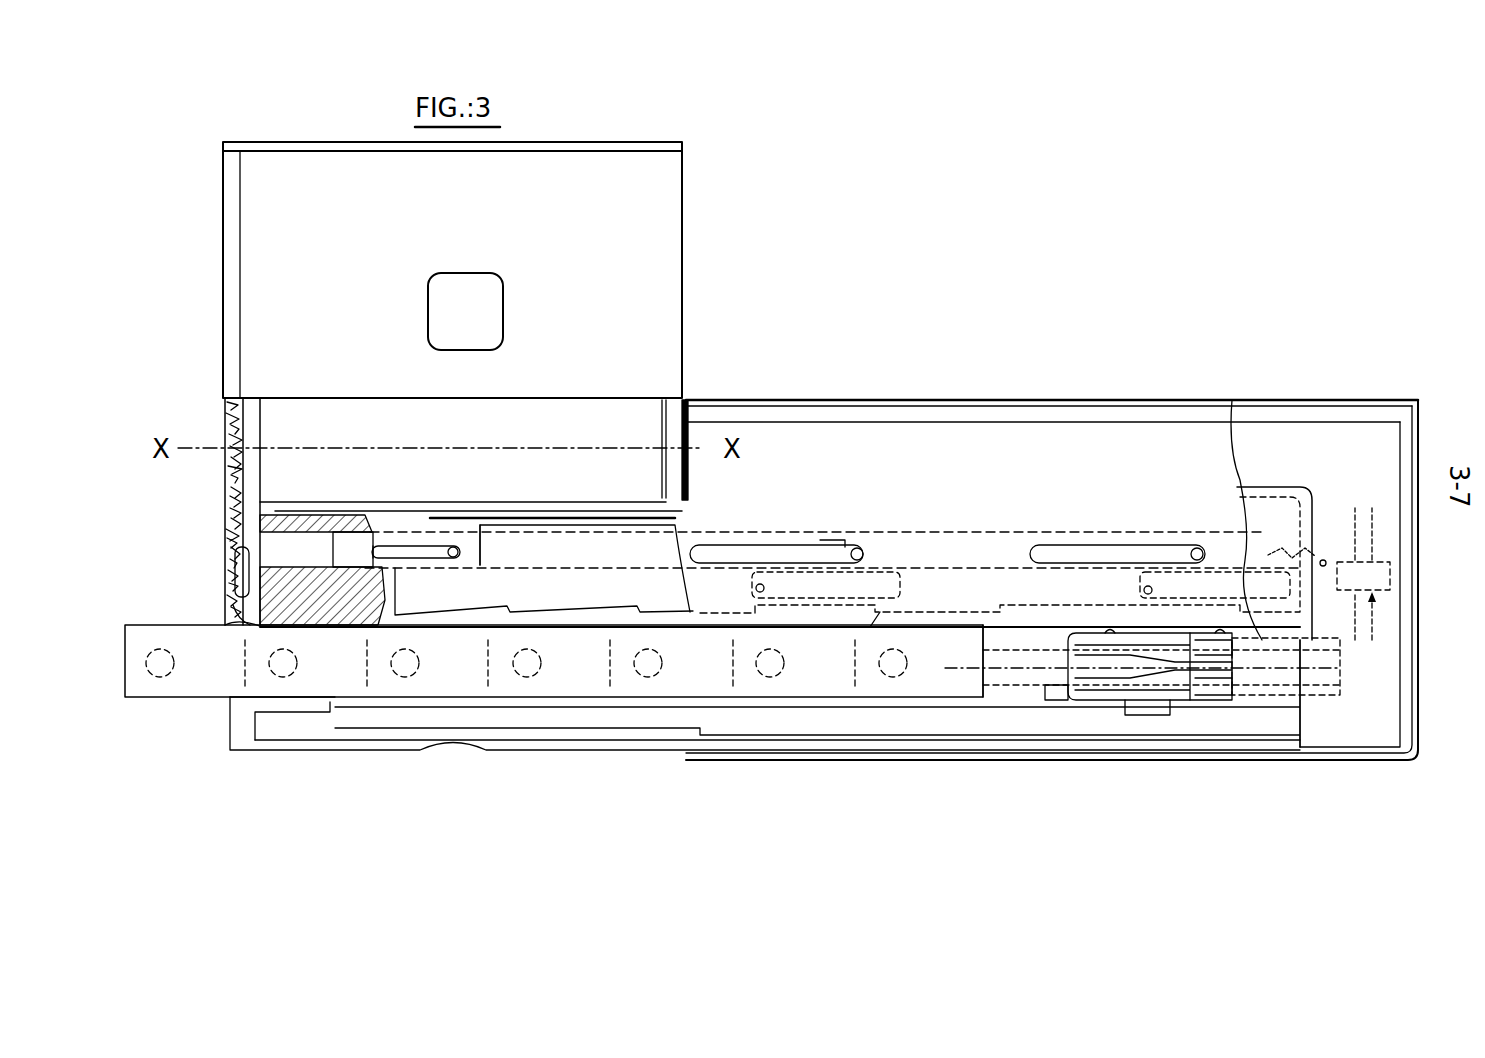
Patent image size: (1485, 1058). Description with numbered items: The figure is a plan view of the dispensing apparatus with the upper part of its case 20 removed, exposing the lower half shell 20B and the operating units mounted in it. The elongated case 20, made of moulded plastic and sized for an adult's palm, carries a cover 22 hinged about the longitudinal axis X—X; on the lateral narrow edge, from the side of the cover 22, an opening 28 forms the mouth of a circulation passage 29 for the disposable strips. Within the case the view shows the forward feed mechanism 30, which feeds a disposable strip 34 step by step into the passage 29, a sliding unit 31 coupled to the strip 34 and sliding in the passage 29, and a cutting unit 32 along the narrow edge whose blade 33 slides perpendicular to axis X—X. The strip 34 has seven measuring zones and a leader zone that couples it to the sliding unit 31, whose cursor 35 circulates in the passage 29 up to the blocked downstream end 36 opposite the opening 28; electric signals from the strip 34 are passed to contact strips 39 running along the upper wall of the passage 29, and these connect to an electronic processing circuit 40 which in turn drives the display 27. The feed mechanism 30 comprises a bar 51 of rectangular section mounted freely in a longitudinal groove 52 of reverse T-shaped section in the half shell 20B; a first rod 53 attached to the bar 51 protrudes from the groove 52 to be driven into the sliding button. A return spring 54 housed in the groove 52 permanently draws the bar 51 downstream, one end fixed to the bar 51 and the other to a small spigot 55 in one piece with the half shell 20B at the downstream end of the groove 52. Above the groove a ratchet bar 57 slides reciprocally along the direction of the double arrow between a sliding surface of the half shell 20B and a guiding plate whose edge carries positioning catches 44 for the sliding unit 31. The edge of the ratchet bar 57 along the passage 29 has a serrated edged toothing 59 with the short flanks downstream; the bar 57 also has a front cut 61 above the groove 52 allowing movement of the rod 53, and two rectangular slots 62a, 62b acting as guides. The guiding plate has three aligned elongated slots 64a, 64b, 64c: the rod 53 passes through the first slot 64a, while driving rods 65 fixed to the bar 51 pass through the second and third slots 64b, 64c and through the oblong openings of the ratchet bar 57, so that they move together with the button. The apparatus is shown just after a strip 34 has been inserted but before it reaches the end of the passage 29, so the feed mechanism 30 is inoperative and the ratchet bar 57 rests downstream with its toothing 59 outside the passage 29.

The case 20 is at (921, 397).
The half shell 20B is at (1403, 762).
The cover 22 is at (663, 210).
The display 27 is at (210, 683).
The opening 28 is at (232, 702).
The circulation passage 29 is at (245, 626).
The forward feed mechanism 30 is at (982, 522).
The sliding unit 31 is at (1180, 703).
The cutting unit 32 is at (220, 520).
The blade 33 is at (240, 572).
The disposable strip 34 is at (215, 700).
The cursor 35 is at (1153, 684).
The end 36 is at (1306, 702).
The contact strips 39 is at (1300, 680).
The electronic processing circuit 40 is at (1392, 580).
The positioning catches 44 is at (990, 627).
The bar 51 is at (352, 545).
The longitudinal groove 52 is at (300, 553).
The first rod 53 is at (453, 546).
The return spring 54 is at (1308, 545).
The spigot 55 is at (1325, 560).
The ratchet bar 57 is at (572, 548).
The serrated edged toothing 59 is at (637, 612).
The front cut 61 is at (476, 545).
The rectangular shaped slot 62a is at (836, 540).
The rectangular shaped slot 62b is at (1167, 545).
The elongated slot 64a is at (406, 551).
The elongated slot 64b is at (755, 552).
The elongated slot 64c is at (1080, 553).
The driving rods 65 is at (862, 554).